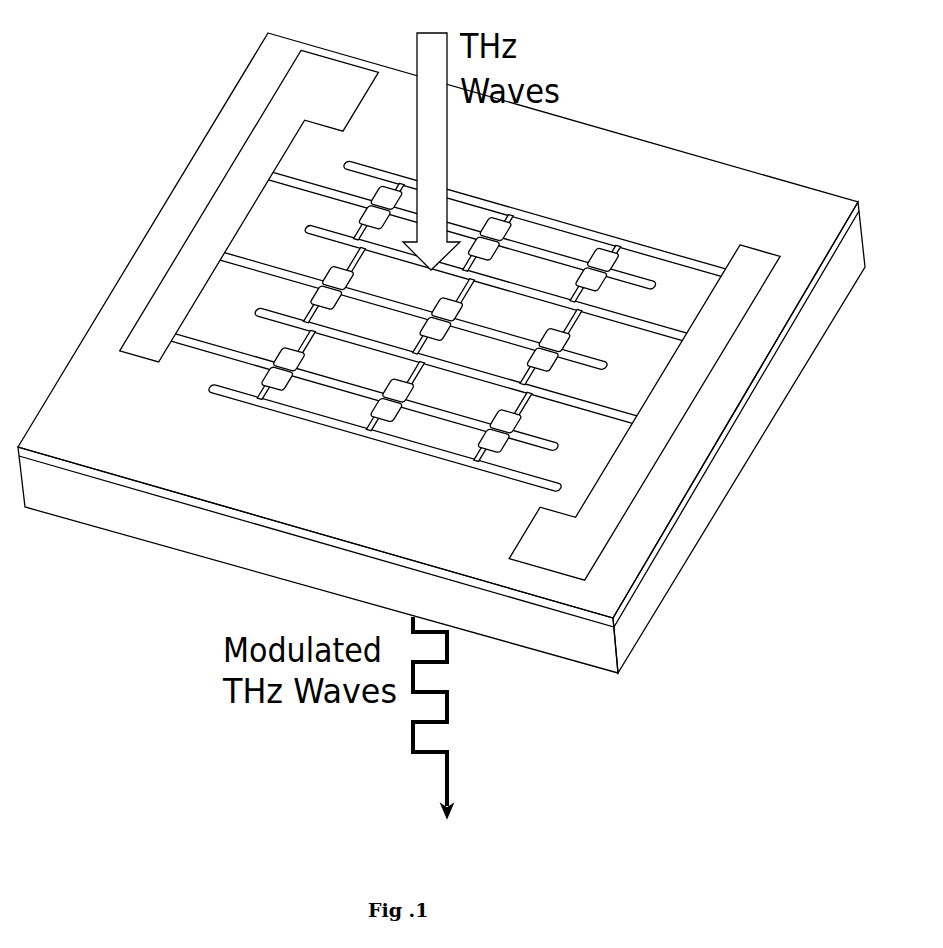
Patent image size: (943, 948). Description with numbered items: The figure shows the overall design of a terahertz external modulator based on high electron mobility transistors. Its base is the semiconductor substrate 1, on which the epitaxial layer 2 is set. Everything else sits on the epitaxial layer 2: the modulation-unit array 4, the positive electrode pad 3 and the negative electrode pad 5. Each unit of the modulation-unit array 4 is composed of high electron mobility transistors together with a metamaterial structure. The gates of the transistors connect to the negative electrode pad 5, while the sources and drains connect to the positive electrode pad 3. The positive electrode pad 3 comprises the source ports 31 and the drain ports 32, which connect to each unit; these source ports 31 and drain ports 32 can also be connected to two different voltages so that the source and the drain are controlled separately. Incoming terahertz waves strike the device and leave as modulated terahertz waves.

The semiconductor substrate 1 is at (717, 477).
The epitaxial layer 2 is at (565, 143).
The positive electrode pad 3 is at (575, 553).
The source ports 31 is at (600, 423).
The drain ports 32 is at (562, 488).
The modulation-unit array 4 is at (300, 263).
The negative electrode pad 5 is at (322, 88).